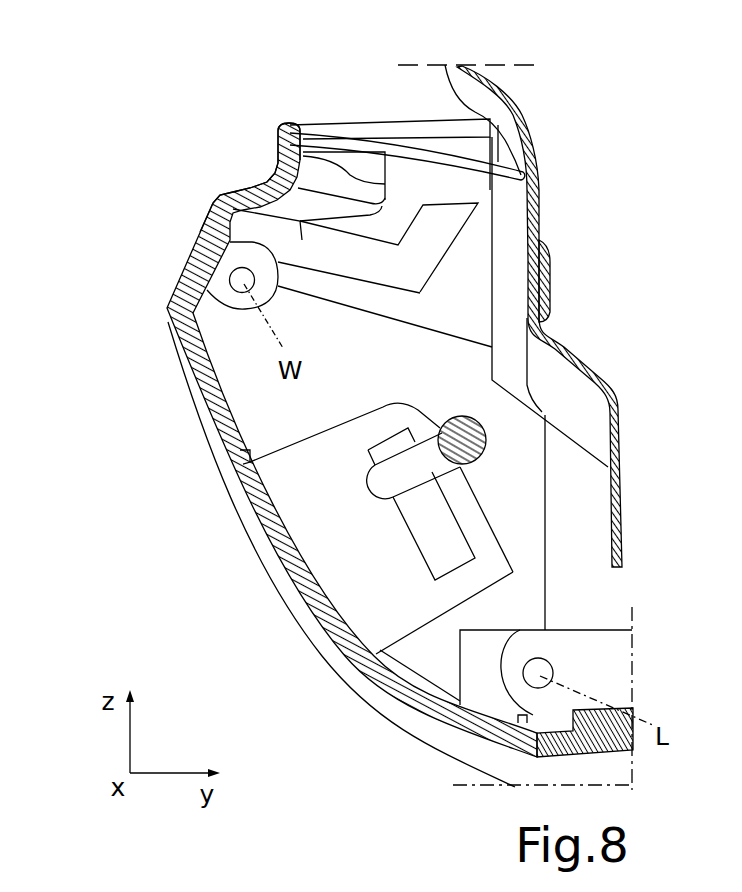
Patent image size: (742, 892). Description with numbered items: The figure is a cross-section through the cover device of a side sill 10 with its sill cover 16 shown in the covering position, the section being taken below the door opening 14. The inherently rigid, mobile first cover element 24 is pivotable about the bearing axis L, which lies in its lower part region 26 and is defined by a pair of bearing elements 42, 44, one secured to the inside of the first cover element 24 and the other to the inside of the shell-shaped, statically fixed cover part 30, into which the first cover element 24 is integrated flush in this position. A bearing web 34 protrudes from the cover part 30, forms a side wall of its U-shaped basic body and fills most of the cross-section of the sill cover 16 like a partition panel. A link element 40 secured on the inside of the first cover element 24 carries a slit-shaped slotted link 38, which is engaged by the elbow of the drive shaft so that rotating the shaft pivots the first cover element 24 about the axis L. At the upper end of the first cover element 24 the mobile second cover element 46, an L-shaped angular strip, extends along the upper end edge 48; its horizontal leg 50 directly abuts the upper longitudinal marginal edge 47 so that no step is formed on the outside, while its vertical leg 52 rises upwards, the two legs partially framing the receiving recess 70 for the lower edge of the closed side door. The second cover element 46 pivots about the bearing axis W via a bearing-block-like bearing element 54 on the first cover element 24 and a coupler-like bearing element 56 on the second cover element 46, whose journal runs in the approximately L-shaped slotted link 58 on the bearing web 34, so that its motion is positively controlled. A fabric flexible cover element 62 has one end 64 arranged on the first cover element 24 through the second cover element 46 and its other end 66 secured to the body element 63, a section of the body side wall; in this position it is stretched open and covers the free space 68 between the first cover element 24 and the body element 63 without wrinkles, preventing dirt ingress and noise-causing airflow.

The side sill 10 is at (183, 551).
The door opening 14 is at (549, 83).
The sill cover 16 is at (407, 130).
The first cover element 24 is at (210, 396).
The lower part region 26 is at (410, 690).
The cover part 30 is at (633, 740).
The bearing web 34 is at (248, 438).
The slotted link 38 is at (433, 528).
The link element 40 is at (373, 605).
The bearing element 42 is at (477, 652).
The bearing element 44 is at (610, 662).
The second cover element 46 is at (254, 174).
The upper longitudinal marginal edge 47 is at (192, 230).
The upper end edge 48 is at (282, 122).
The leg 50 is at (210, 193).
The leg 52 is at (385, 184).
The bearing element 54 is at (213, 292).
The bearing element 56 is at (273, 255).
The slotted link 58 is at (387, 262).
The flexible cover element 62 is at (423, 120).
The body element 63 is at (532, 126).
The end of flexible cover element 64 is at (297, 123).
The other end of flexible cover element 66 is at (522, 168).
The free space 68 is at (397, 391).
The receiving recess 70 is at (256, 152).